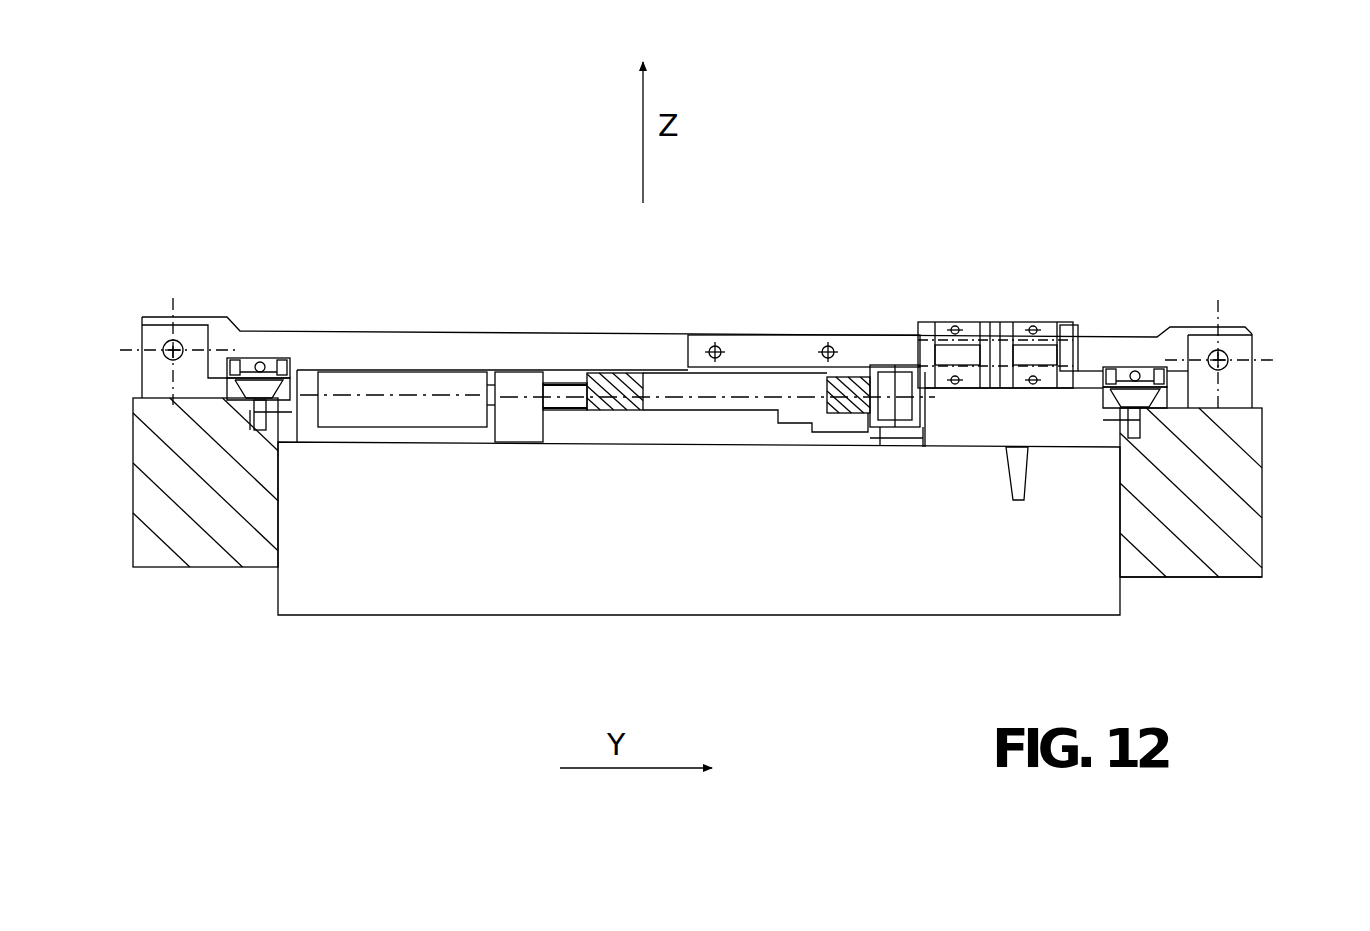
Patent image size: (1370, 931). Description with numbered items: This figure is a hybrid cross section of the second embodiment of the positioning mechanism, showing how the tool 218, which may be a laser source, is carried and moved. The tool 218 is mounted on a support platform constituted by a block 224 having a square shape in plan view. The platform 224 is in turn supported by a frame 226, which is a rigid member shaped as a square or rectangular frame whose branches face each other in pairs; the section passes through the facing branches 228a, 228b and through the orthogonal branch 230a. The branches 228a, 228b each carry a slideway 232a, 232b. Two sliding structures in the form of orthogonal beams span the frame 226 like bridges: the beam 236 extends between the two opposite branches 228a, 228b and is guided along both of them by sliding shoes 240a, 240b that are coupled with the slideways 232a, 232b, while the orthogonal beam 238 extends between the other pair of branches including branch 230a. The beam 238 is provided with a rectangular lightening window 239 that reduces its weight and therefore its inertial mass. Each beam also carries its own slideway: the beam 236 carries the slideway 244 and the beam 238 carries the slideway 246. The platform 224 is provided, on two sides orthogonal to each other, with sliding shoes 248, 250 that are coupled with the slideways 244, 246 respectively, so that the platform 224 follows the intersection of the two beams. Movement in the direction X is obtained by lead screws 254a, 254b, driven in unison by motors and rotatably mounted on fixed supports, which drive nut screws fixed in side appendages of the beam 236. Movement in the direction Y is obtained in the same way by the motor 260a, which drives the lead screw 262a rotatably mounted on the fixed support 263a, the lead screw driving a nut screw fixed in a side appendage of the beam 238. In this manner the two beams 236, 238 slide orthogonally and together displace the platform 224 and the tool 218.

The tool 218 is at (1020, 473).
The block 224 is at (968, 433).
The frame 226 is at (1240, 580).
The branch 228a is at (150, 498).
The branch 228b is at (1242, 510).
The branch 230a is at (722, 588).
The slideway 232a is at (293, 385).
The slideway 232b is at (1103, 400).
The sliding structure 236 is at (450, 330).
The sliding structure 238 is at (628, 418).
The lightening window 239 is at (645, 397).
The sliding shoe 240a is at (277, 357).
The sliding shoe 240b is at (1128, 355).
The slideway 244 is at (770, 335).
The slideway 246 is at (880, 372).
The sliding shoe 248 is at (1033, 325).
The sliding shoe 250 is at (910, 432).
The lead screw 254a is at (172, 340).
The lead screw 254b is at (1232, 352).
The motor 260a is at (430, 412).
The lead screw 262a is at (577, 405).
The fixed support 263a is at (513, 428).